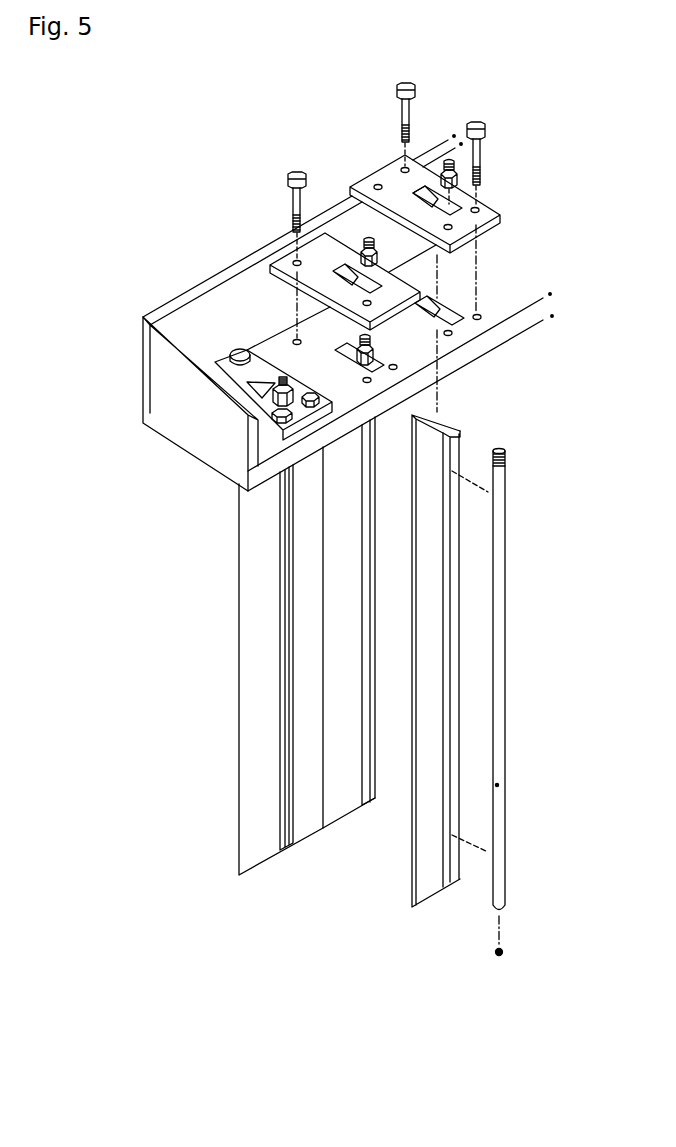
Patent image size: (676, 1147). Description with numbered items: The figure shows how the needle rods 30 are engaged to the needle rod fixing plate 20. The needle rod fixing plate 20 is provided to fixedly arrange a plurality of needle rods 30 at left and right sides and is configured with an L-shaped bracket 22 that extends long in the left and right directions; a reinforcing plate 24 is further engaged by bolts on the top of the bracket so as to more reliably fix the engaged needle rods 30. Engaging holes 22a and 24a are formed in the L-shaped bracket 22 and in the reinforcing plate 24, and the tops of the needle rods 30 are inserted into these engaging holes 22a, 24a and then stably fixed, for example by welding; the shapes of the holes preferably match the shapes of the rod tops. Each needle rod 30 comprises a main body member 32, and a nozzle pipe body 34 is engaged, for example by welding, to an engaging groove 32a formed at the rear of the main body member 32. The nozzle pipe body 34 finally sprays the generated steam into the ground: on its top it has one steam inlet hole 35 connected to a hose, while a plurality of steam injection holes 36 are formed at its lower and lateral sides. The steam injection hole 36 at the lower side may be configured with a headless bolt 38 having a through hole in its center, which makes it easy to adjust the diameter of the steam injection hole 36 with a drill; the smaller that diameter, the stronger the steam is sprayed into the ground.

The needle rod fixing plate 20 is at (177, 417).
The L-shaped bracket 22 is at (498, 307).
The engaging hole 22a is at (452, 318).
The reinforcing plate 24 is at (392, 183).
The engaging hole 24a is at (423, 198).
The needle rod 30 is at (354, 680).
The main body member 32 is at (336, 675).
The engaging groove 32a is at (456, 858).
The nozzle pipe body 34 is at (287, 818).
The steam inlet hole 35 is at (364, 347).
The steam injection hole 36 is at (499, 785).
The headless bolt 38 is at (502, 953).